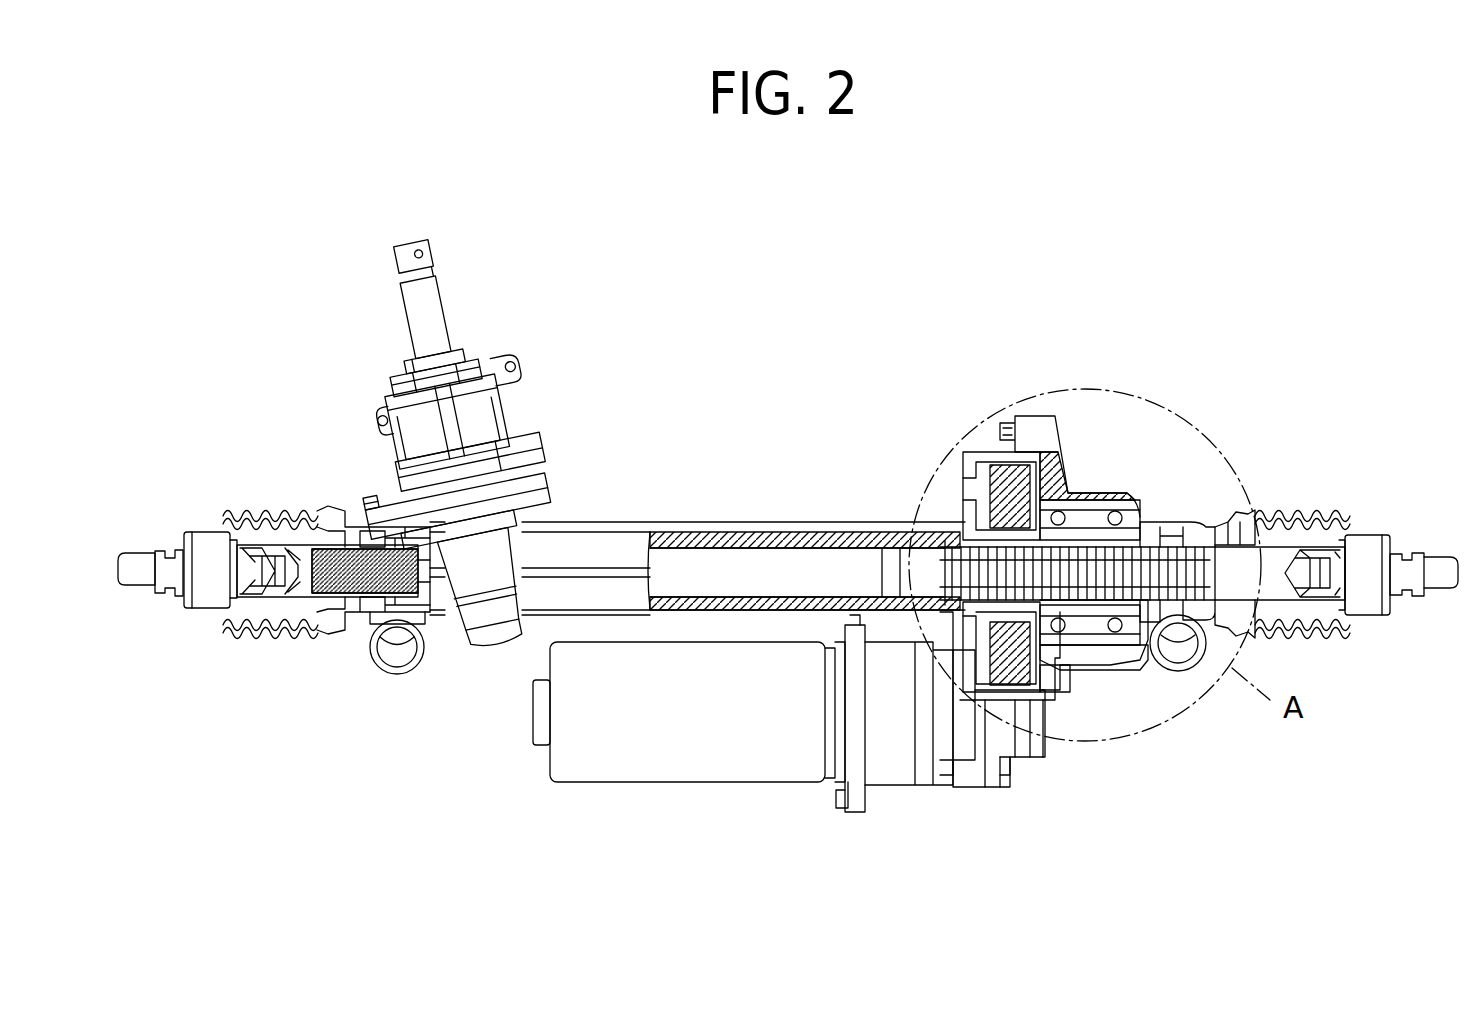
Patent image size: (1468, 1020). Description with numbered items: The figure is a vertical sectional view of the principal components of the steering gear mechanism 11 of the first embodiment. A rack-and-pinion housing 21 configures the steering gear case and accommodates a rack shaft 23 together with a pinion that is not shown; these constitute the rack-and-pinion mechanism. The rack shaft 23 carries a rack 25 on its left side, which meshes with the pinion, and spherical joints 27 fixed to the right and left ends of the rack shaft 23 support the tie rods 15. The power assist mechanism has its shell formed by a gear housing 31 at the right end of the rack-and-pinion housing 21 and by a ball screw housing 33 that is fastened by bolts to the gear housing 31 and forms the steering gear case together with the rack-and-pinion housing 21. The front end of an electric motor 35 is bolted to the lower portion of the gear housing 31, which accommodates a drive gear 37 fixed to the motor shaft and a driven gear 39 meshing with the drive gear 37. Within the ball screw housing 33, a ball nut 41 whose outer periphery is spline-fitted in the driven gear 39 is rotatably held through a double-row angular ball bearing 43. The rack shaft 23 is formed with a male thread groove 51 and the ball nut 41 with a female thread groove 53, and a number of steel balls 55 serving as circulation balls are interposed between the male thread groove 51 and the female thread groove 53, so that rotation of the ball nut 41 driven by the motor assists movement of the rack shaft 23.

The steering gear mechanism 11 is at (849, 307).
The tie rod 15 is at (140, 556).
The rack-and-pinion housing 21 is at (618, 520).
The rack shaft 23 is at (770, 532).
The rack 25 is at (352, 552).
The spherical joint 27 is at (205, 540).
The gear housing 31 is at (965, 492).
The ball screw housing 33 is at (1062, 470).
The electric motor 35 is at (705, 766).
The drive gear 37 is at (995, 690).
The driven gear 39 is at (990, 462).
The ball nut 41 is at (1170, 522).
The double-row angular ball bearing 43 is at (1088, 530).
The male thread groove 51 is at (1150, 640).
The female thread groove 53 is at (1095, 645).
The steel ball 55 is at (1110, 650).